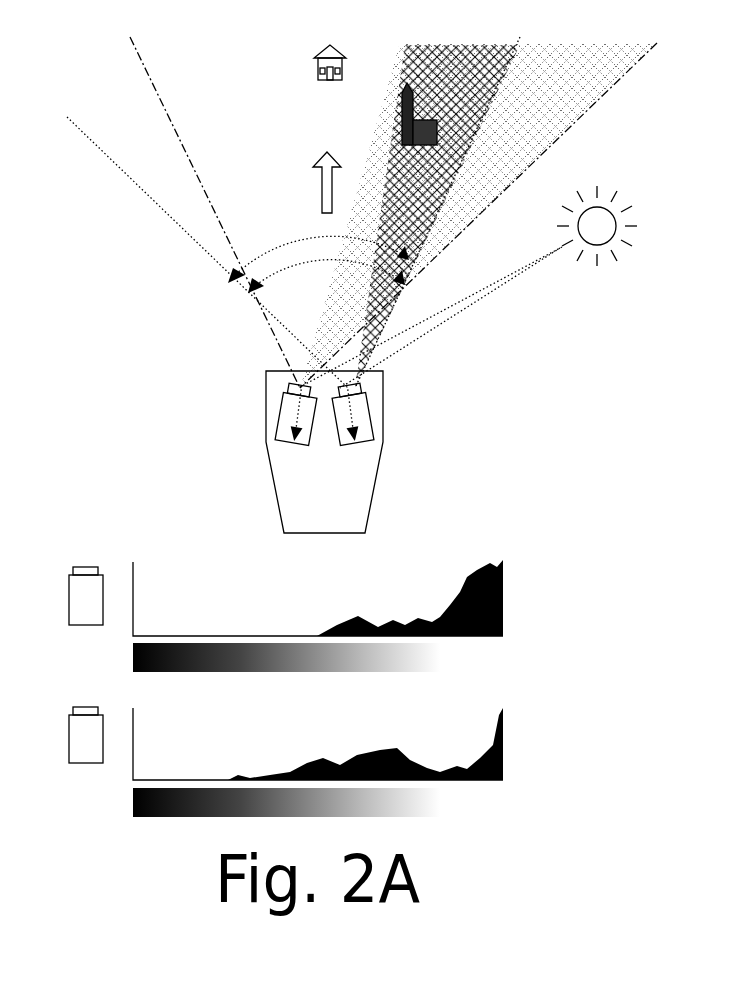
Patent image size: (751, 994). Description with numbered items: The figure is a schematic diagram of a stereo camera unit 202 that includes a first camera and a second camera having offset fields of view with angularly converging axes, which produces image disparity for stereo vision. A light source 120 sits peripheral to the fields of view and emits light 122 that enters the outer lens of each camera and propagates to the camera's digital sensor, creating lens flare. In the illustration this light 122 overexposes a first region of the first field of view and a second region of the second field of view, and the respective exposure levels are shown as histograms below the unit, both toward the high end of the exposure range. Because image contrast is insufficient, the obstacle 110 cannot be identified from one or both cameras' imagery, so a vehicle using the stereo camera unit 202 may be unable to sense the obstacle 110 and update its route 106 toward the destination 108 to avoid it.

The route 106 is at (321, 174).
The destination 108 is at (311, 57).
The obstacle 110 is at (400, 126).
The light source 120 is at (613, 265).
The light 122 is at (457, 316).
The stereo camera unit 202 is at (267, 450).